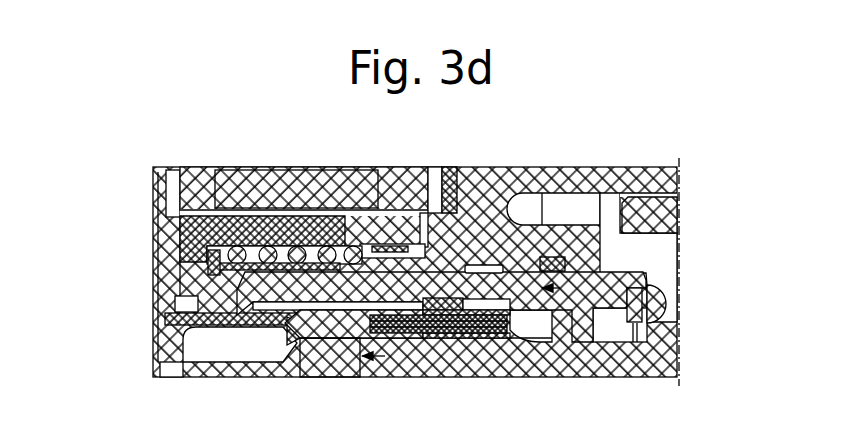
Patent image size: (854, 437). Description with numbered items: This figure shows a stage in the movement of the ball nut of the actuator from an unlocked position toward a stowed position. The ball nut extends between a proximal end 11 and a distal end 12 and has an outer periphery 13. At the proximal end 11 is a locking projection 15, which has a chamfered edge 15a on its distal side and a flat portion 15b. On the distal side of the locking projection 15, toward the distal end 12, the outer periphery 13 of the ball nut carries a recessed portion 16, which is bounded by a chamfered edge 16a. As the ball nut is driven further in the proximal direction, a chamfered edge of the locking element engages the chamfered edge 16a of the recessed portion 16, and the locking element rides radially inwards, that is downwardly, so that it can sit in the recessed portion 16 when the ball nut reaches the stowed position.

The distal end 12 is at (707, 368).
The proximal end 11 is at (268, 351).
The outer periphery 13 is at (652, 344).
The locking projection 15 is at (347, 345).
The chamfered edge 15a is at (293, 343).
The flat portion 15b is at (330, 337).
The recessed portion 16 is at (517, 343).
The chamfered edge 16a is at (441, 356).